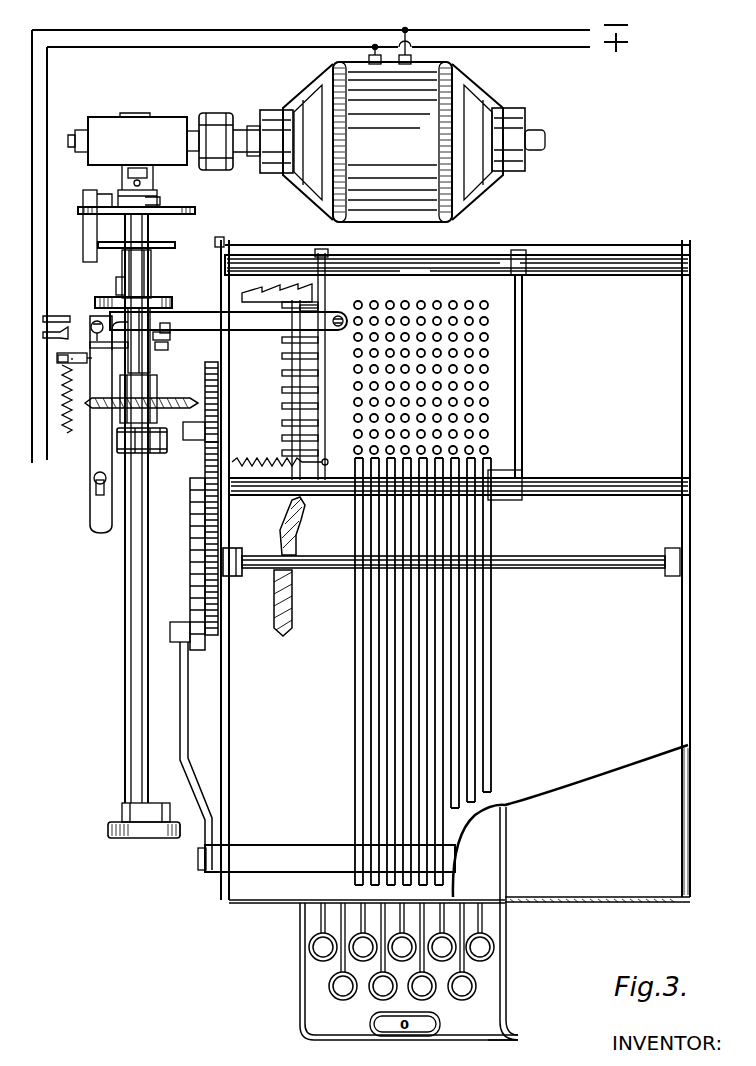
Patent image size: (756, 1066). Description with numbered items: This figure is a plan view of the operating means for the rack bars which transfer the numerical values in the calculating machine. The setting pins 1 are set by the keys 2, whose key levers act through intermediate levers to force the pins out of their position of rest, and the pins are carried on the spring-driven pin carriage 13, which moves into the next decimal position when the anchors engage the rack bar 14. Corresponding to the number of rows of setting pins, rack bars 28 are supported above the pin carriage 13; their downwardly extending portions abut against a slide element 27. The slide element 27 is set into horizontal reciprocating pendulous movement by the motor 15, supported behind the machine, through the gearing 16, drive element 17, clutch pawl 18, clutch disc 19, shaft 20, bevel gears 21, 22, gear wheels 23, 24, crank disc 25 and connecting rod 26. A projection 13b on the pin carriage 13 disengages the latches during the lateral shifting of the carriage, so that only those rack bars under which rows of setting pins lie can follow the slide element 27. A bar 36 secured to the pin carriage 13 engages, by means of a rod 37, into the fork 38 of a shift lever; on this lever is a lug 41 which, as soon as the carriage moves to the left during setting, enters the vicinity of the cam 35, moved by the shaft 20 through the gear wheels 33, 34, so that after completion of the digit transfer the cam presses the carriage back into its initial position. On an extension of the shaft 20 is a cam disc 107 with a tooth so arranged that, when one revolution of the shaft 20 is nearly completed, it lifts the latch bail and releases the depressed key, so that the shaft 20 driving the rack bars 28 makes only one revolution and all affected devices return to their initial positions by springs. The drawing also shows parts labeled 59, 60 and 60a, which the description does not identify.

The setting pins 1 is at (483, 337).
The keys 2 is at (333, 978).
The pin carriage 13 is at (512, 367).
The projection 13b is at (487, 507).
The rack bar 14 is at (278, 293).
The motor 15 is at (352, 167).
The gearing 16 is at (128, 132).
The drive element 17 is at (132, 196).
The clutch pawl 18 is at (160, 204).
The clutch disc 19 is at (172, 212).
The shaft 20 is at (162, 263).
The bevel gear 21 is at (165, 402).
The bevel gear 22 is at (197, 453).
The gear wheel 23 is at (210, 414).
The gear wheel 24 is at (221, 556).
The crank disc 25 is at (198, 542).
The connecting rod 26 is at (190, 732).
The slide element 27 is at (278, 852).
The rack bars 28 is at (485, 698).
The gear wheel 33 is at (162, 285).
The gear wheel 34 is at (97, 300).
The cam 35 is at (112, 350).
The bar 36 is at (287, 318).
The rod 37 is at (165, 330).
The fork 38 is at (170, 336).
The lug 41 is at (168, 348).
The shaft 59 is at (303, 568).
The cam 60 is at (287, 617).
The cam lobe 60a is at (298, 500).
The cam disc 107 is at (163, 842).